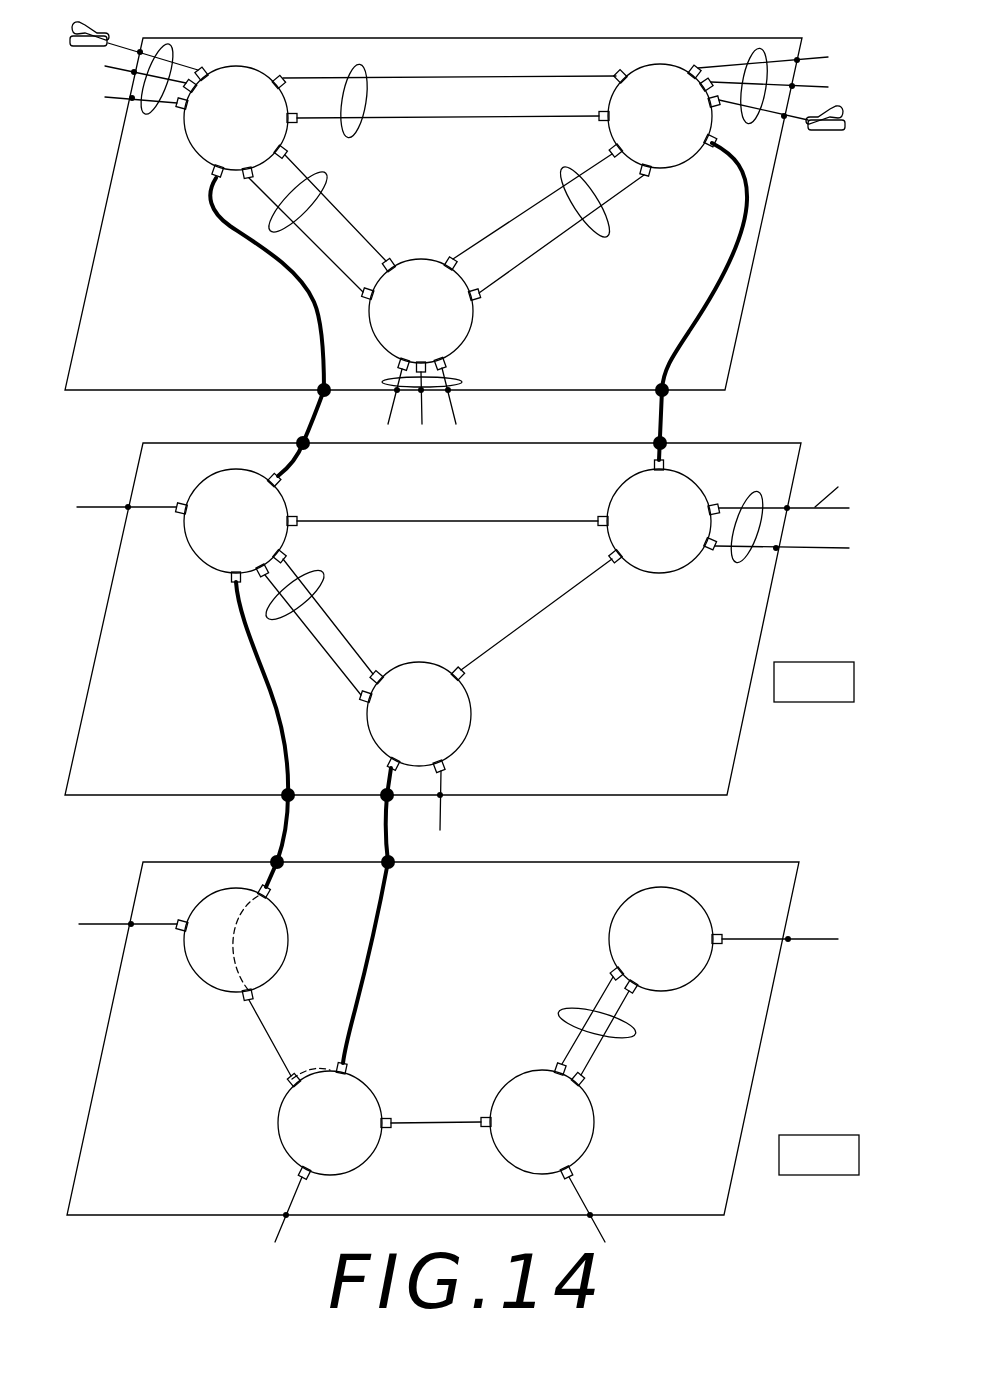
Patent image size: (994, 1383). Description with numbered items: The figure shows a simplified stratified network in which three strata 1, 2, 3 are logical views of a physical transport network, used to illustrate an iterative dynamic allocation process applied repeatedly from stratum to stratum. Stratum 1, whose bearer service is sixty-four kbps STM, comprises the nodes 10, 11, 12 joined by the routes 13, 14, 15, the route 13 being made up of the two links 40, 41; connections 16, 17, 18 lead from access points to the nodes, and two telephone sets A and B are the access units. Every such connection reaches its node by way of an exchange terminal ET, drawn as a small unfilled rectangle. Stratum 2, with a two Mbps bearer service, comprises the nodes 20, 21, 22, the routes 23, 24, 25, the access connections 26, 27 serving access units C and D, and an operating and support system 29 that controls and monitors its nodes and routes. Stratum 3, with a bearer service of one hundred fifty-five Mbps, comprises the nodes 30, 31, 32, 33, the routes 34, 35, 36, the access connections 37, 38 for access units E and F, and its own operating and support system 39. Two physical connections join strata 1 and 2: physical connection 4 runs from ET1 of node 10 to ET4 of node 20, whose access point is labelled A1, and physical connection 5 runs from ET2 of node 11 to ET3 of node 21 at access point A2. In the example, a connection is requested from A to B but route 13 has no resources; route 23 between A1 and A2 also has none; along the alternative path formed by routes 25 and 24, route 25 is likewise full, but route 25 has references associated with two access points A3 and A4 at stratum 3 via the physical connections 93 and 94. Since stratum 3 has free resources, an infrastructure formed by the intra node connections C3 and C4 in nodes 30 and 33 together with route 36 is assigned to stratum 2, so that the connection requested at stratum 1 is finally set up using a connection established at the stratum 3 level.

The stratum 1 is at (68, 366).
The stratum 2 is at (66, 790).
The stratum 3 is at (70, 1210).
The physical connection 4 is at (210, 202).
The physical connection 5 is at (748, 202).
The node 10 is at (236, 122).
The node 11 is at (659, 120).
The node 12 is at (421, 314).
The route 13 is at (358, 64).
The route 14 is at (563, 168).
The route 15 is at (318, 175).
The connections 16 is at (167, 46).
The connections 17 is at (752, 50).
The connections 18 is at (460, 383).
The node 20 is at (236, 525).
The node 21 is at (659, 516).
The node 22 is at (415, 717).
The route 23 is at (546, 519).
The route 24 is at (527, 622).
The route 25 is at (268, 609).
The connections 26 is at (154, 507).
The connections 27 is at (750, 492).
The operating and support system 29 is at (828, 702).
The node 30 is at (232, 943).
The node 31 is at (665, 940).
The node 32 is at (543, 1152).
The node 33 is at (333, 1152).
The route 34 is at (637, 1034).
The route 35 is at (422, 1124).
The route 36 is at (275, 1059).
The connections 37 is at (151, 922).
The connections 38 is at (766, 937).
The operating and support system 39 is at (834, 1177).
The link 40 is at (408, 77).
The link 41 is at (463, 117).
The physical connection 93 is at (273, 710).
The physical connection 94 is at (388, 776).
The physical access point A1 is at (317, 442).
The physical access point A2 is at (667, 441).
The access point A3 is at (286, 859).
The access point A4 is at (392, 866).
The intra node connection C3 is at (240, 956).
The intra node connection C4 is at (318, 1082).
The exchange terminal ET is at (198, 68).
The exchange terminal ET1 is at (214, 172).
The exchange terminal ET2 is at (712, 137).
The exchange terminal ET3 is at (652, 462).
The exchange terminal ET4 is at (272, 473).
The telephone set A is at (72, 34).
The telephone set B is at (846, 121).
The access unit C is at (47, 501).
The access unit D is at (836, 485).
The access unit E is at (48, 921).
The access unit F is at (853, 917).